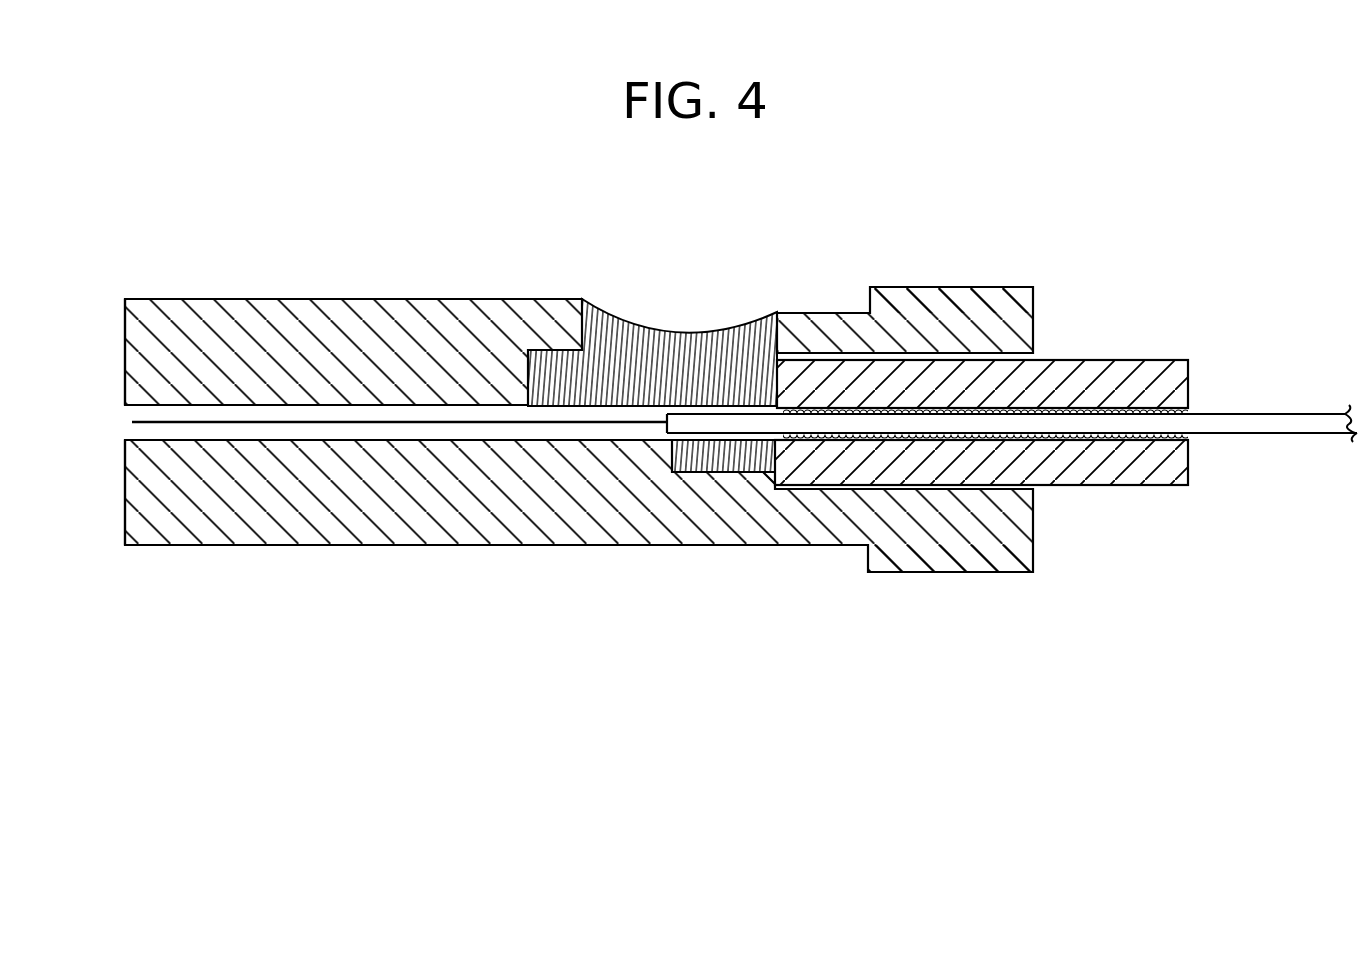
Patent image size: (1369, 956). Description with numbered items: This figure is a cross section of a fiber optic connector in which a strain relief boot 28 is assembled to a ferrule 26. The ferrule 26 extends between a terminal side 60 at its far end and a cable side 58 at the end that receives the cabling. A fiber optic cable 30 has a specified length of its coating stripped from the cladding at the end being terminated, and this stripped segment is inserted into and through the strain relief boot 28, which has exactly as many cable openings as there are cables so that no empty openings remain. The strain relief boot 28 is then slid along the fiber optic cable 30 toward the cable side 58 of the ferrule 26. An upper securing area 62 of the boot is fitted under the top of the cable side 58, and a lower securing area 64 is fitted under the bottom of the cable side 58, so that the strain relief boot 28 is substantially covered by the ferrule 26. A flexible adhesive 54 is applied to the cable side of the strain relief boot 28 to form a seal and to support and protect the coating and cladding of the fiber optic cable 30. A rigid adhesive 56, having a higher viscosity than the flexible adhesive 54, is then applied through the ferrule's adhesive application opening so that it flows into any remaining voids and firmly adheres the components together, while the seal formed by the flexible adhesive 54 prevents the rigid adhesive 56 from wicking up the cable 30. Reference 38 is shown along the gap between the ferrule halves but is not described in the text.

The ferrule 26 is at (306, 296).
The strain relief boot 28 is at (1121, 357).
The fiber optic cable 30 is at (1260, 418).
The gap between housing portions 38 is at (140, 423).
The flexible adhesive 54 is at (1170, 402).
The rigid adhesive 56 is at (608, 328).
The cable side 58 is at (1020, 297).
The terminal side 60 is at (143, 331).
The upper securing area 62 is at (810, 385).
The lower securing area 64 is at (797, 470).